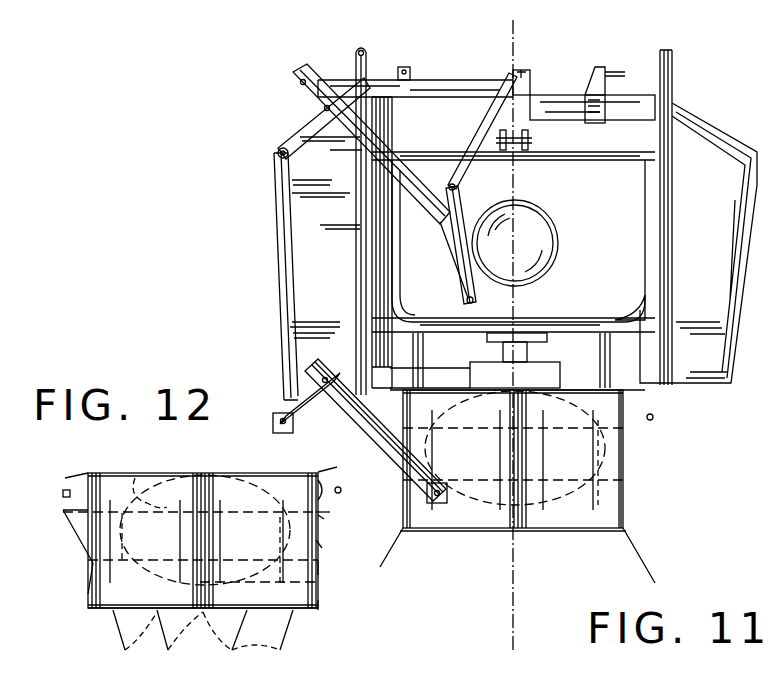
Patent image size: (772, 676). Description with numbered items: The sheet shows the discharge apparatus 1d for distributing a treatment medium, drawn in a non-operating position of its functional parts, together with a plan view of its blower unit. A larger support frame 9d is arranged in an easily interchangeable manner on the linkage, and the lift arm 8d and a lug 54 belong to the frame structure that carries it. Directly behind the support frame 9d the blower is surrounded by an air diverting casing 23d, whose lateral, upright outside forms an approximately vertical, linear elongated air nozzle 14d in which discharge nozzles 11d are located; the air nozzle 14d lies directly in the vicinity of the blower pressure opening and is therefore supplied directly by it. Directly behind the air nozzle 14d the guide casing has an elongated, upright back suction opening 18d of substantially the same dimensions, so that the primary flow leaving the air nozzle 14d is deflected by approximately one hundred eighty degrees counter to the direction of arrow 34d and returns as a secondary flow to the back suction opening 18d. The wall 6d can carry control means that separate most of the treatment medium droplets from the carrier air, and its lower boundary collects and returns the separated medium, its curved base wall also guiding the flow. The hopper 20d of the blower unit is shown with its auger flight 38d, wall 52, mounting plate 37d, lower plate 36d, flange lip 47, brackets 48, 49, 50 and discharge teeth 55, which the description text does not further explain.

In FIG. 11, the machine 1d is at (244, 106).
In FIG. 11, the lift arm 8d is at (331, 68).
In FIG. 11, the lug 54 is at (426, 85).
In FIG. 11, the support frame 9d is at (630, 98).
In FIG. 11, the wall 6d is at (720, 105).
In FIG. 11, the arrow 34d is at (597, 216).
In FIG. 11, the air nozzle 14d is at (618, 393).
In FIG. 12, the air nozzle 14d is at (308, 483).
In FIG. 11, the discharge nozzles 11d is at (625, 430).
In FIG. 12, the discharge nozzles 11d is at (341, 490).
In FIG. 11, the hopper wall 52 is at (653, 507).
In FIG. 12, the hopper wall 52 is at (328, 522).
In FIG. 11, the back suction opening 18d is at (627, 515).
In FIG. 12, the back suction opening 18d is at (318, 592).
In FIG. 11, the hopper 20d is at (452, 515).
In FIG. 12, the hopper 20d is at (98, 631).
In FIG. 12, the auger flight 38d is at (137, 478).
In FIG. 12, the air diverting casing 23d is at (236, 484).
In FIG. 12, the flange lip 47 is at (320, 487).
In FIG. 12, the bracket 48 is at (328, 513).
In FIG. 12, the bracket 49 is at (316, 545).
In FIG. 12, the bracket 50 is at (318, 565).
In FIG. 12, the discharge teeth 55 is at (283, 612).
In FIG. 12, the mounting plate 37d is at (76, 528).
In FIG. 12, the lower plate 36d is at (88, 594).